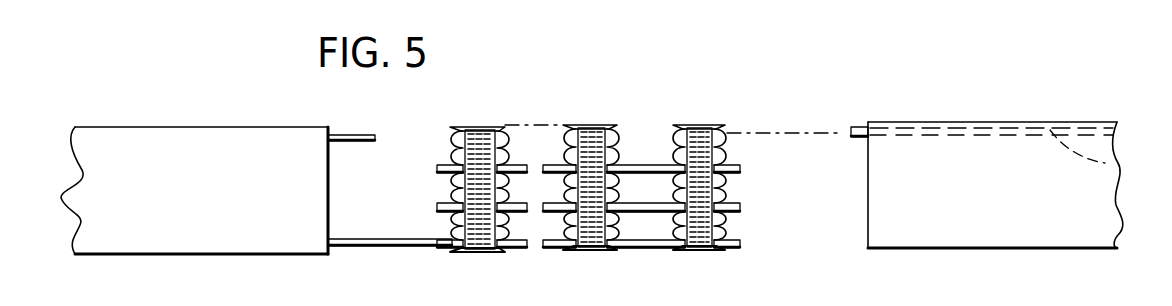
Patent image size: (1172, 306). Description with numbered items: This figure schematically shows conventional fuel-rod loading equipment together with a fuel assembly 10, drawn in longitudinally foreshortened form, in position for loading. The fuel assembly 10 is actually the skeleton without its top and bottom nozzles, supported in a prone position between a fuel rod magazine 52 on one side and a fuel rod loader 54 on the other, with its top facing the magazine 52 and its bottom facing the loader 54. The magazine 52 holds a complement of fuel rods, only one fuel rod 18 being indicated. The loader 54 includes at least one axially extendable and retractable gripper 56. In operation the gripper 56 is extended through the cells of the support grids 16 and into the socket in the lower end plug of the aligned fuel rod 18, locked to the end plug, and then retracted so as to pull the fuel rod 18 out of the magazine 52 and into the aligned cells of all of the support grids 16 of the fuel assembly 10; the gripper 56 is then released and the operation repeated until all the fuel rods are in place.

The fuel assembly 10 is at (638, 185).
The support grids 16 is at (690, 247).
The fuel rod 18 is at (655, 237).
The fuel rod magazine 52 is at (937, 122).
The fuel rod loader 54 is at (185, 245).
The gripper 56 is at (363, 137).